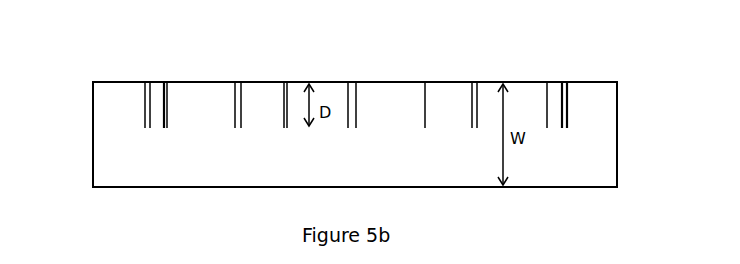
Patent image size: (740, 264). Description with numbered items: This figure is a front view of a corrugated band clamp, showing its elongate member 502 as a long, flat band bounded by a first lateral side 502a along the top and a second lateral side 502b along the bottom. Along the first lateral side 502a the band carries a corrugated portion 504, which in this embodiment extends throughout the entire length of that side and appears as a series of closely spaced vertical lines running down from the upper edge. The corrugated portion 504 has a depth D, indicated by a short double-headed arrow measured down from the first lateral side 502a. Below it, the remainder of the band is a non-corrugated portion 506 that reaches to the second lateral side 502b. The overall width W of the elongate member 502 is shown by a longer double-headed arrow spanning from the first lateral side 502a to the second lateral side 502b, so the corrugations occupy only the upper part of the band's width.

The elongate member 502 is at (125, 125).
The first lateral side 502a is at (355, 71).
The second lateral side 502b is at (355, 199).
The corrugated portion 504 is at (403, 82).
The non-corrugated portion 506 is at (423, 185).